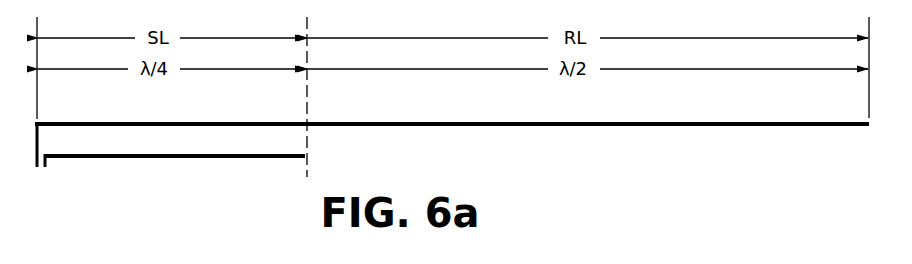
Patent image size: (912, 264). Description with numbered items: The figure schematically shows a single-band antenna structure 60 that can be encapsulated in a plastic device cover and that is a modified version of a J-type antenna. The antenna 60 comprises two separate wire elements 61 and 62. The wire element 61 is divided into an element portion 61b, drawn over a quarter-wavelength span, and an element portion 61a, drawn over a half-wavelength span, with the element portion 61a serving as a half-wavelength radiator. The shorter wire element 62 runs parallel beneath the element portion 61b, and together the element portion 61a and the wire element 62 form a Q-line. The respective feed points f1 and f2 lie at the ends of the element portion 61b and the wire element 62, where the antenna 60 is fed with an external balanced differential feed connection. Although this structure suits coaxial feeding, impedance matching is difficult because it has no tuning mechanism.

The antenna structure 60 is at (452, 159).
The wire element 61 is at (452, 128).
The element portion 61a is at (375, 122).
The element portion 61b is at (185, 122).
The wire element 62 is at (190, 158).
The feed point f1 is at (37, 167).
The feed point f2 is at (46, 167).